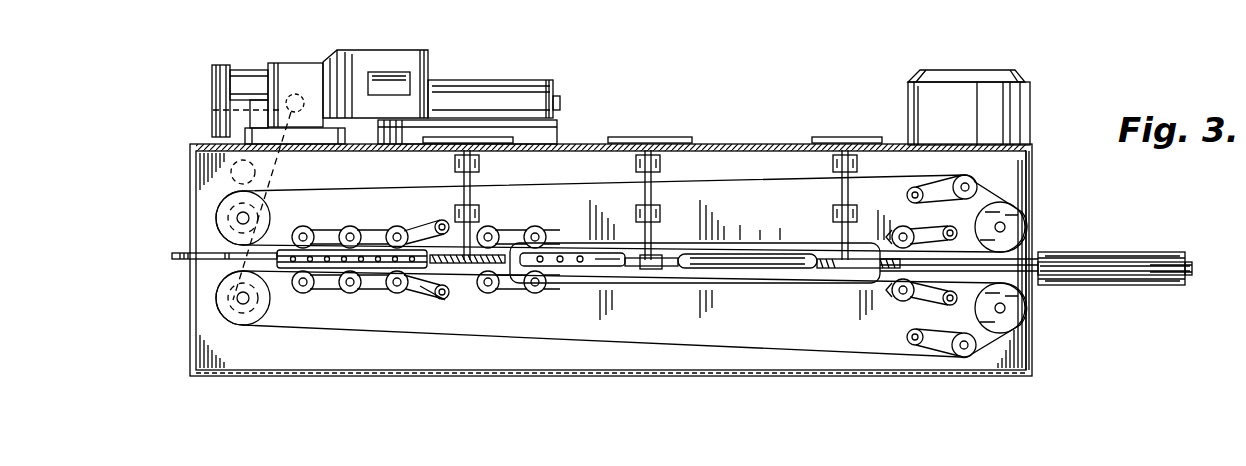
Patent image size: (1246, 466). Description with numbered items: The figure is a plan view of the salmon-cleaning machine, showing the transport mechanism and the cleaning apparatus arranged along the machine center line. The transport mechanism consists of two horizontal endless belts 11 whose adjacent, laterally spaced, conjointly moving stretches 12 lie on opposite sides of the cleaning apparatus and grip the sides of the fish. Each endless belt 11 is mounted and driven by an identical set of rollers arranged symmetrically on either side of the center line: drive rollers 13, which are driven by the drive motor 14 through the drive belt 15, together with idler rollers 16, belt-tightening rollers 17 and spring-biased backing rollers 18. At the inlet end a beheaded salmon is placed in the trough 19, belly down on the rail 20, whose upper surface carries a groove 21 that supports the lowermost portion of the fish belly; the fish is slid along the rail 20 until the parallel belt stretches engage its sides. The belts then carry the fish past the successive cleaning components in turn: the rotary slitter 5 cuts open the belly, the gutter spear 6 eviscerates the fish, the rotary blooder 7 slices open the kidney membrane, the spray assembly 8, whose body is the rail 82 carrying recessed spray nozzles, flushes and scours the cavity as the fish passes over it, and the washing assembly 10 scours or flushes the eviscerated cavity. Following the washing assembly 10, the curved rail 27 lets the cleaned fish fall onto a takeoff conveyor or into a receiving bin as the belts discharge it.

The rotary slitter 5 is at (845, 280).
The gutter spear 6 is at (768, 244).
The rotary blooder 7 is at (672, 280).
The spray assembly 8 is at (576, 238).
The rail 82 is at (597, 268).
The washing assembly 10 is at (391, 233).
The conveyor belt 11 is at (511, 188).
The conjointly moving stretches 12 is at (412, 300).
The drive rollers 13 is at (225, 298).
The drive motor 14 is at (413, 64).
The drive belt 15 is at (213, 110).
The idler rollers 16 is at (1010, 226).
The belt-tightening rollers 17 is at (975, 188).
The spring-biased backing rollers 18 is at (392, 228).
The trough 19 is at (1128, 288).
The rail 20 is at (1176, 288).
The groove 21 is at (1165, 262).
The rail 27 is at (193, 262).